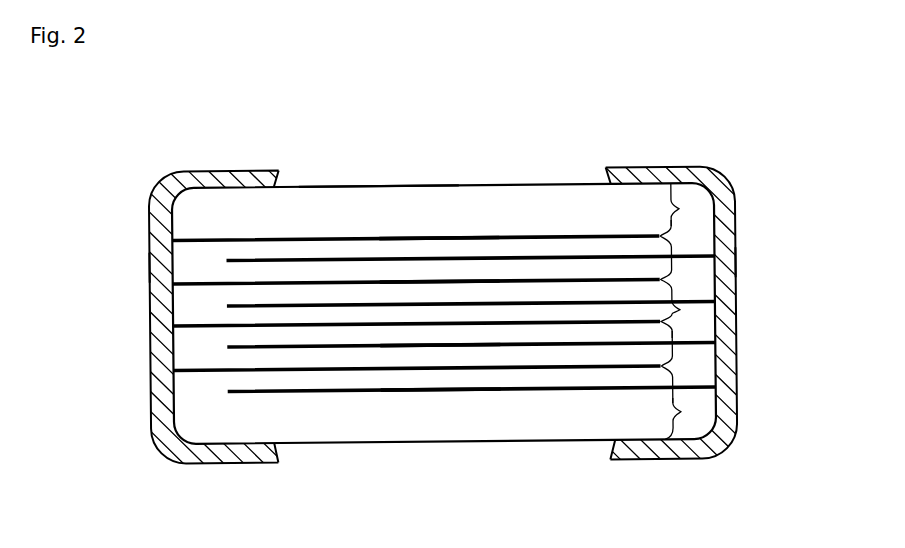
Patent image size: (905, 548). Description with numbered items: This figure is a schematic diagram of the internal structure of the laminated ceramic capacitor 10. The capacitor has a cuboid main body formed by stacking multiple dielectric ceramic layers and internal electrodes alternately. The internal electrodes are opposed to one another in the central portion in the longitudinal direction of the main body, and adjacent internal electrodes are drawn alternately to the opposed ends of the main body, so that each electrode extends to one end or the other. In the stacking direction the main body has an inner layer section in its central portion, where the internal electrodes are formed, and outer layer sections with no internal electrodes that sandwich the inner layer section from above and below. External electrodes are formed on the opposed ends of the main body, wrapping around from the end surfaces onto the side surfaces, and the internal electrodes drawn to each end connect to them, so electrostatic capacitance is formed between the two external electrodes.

The laminated ceramic capacitor 10 is at (183, 116).